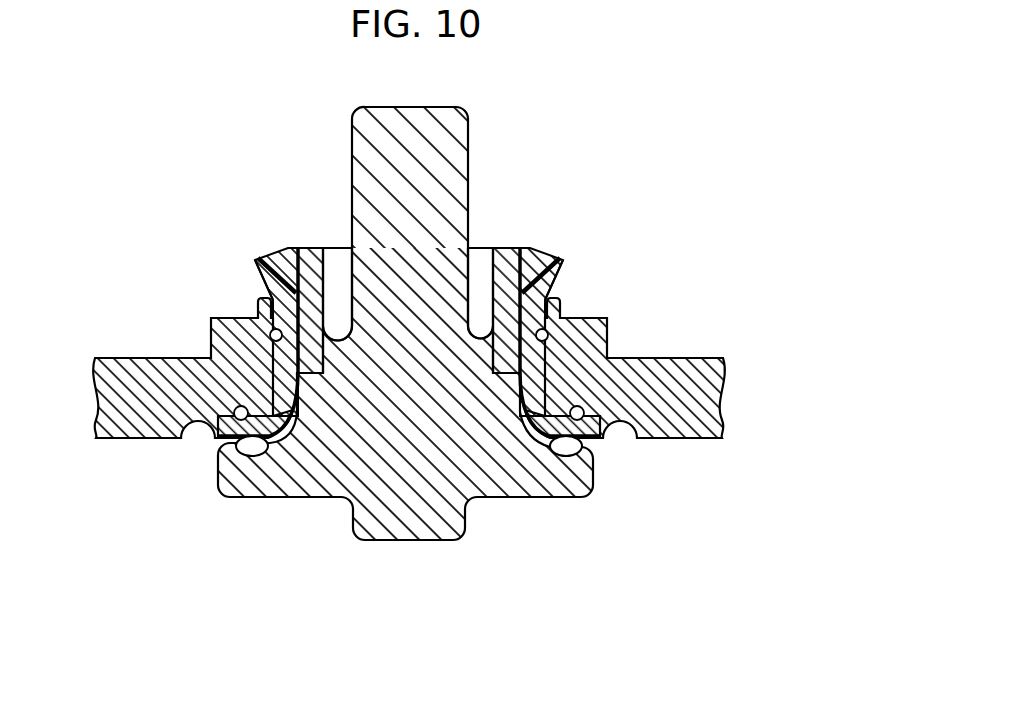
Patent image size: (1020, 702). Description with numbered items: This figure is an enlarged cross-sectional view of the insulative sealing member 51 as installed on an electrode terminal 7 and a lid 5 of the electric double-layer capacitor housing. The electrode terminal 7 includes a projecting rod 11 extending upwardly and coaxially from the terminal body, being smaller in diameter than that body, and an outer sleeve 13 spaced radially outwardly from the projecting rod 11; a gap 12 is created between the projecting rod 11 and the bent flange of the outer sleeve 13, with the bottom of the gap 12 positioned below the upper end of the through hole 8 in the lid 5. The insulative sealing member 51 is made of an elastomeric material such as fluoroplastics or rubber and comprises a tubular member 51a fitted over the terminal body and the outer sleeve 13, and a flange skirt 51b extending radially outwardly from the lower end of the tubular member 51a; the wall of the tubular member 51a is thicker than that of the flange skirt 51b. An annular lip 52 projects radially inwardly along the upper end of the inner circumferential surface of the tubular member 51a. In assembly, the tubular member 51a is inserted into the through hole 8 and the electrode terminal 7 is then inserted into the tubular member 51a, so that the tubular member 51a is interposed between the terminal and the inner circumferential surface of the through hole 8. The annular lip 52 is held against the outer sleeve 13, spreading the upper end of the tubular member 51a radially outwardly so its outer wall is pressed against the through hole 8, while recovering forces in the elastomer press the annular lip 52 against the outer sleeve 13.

The lid 5 is at (667, 358).
The electrode terminal 7 is at (445, 314).
The through hole 8 is at (547, 327).
The projecting rod 11 is at (468, 132).
The gap 12 is at (480, 267).
The outer sleeve 13 is at (507, 250).
The insulative sealing member 51 is at (455, 386).
The tubular member 51a is at (562, 274).
The flange skirt 51b is at (593, 436).
The annular lip 52 is at (530, 250).